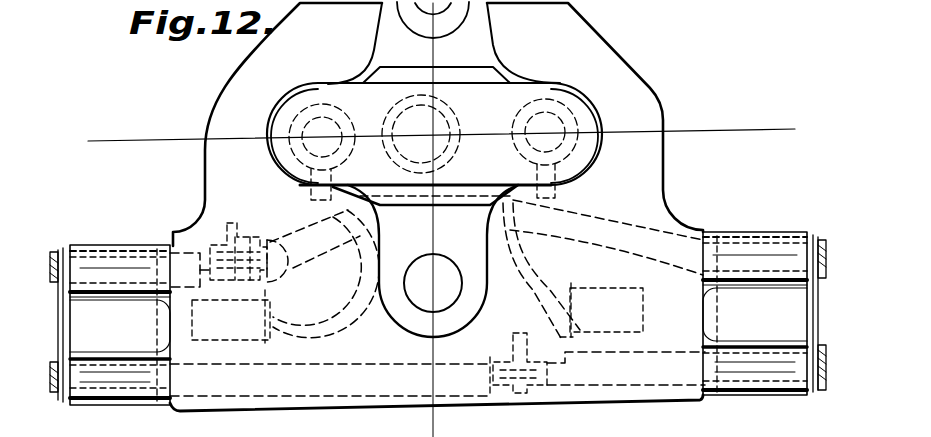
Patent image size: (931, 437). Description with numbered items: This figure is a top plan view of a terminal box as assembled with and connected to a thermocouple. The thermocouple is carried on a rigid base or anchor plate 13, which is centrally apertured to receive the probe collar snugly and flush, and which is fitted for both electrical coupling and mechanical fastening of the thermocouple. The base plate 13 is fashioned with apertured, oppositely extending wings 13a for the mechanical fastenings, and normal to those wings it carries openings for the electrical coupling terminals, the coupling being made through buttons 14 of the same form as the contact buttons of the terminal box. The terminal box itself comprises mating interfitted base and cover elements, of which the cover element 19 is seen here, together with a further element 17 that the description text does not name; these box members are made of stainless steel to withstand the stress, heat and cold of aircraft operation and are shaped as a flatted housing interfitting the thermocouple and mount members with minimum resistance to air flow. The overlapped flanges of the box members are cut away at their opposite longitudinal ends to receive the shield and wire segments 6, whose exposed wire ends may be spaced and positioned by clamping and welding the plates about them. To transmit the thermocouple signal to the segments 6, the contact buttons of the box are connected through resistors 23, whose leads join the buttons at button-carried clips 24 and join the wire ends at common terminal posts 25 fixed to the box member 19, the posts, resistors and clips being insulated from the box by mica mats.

The shield and wire segments 6 is at (60, 252).
The base or anchor plate 13 is at (88, 132).
The wings 13a is at (383, 307).
The buttons 14 is at (425, 18).
The mounting flange face 17 is at (497, 113).
The cover element 19 is at (660, 186).
The resistors 23 is at (273, 340).
The clips 24 is at (276, 116).
The terminal posts 25 is at (232, 242).